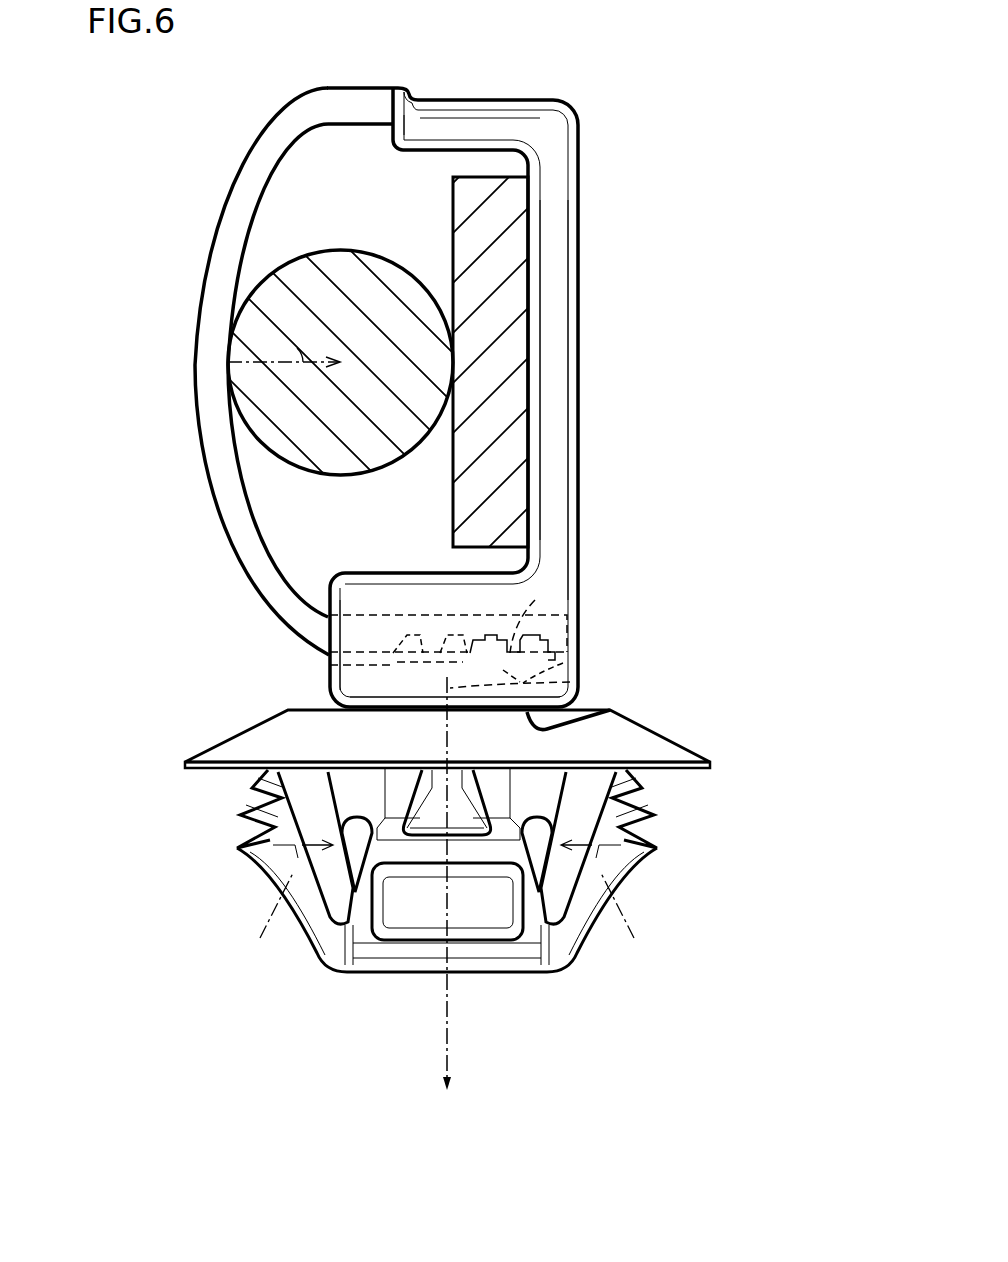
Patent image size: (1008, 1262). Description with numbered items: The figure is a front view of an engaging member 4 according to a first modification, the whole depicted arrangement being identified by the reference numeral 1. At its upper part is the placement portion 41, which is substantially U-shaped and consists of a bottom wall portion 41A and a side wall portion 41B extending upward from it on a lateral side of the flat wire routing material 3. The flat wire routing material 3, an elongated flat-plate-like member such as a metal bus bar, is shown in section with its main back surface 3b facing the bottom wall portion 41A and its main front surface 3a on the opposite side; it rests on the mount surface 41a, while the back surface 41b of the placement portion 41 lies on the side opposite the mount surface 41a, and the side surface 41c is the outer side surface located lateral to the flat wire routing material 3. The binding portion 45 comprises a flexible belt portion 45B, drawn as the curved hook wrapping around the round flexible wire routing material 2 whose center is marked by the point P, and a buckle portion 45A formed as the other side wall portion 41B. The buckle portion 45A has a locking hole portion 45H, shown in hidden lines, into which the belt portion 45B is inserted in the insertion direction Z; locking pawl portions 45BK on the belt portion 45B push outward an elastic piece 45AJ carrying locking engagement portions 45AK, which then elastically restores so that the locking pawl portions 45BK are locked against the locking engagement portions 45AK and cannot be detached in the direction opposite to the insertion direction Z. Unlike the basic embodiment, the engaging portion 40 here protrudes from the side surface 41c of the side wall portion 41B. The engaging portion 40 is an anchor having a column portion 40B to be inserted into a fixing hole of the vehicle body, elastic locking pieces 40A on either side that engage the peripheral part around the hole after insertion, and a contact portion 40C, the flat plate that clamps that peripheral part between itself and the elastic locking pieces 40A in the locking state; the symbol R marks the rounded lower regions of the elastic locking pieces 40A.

The vehicle interior component assembly 1 is at (629, 1025).
The flexible wire routing material 2 is at (255, 290).
The flat wire routing material 3 is at (445, 216).
The main front surface 3a is at (452, 258).
The main back surface 3b is at (530, 332).
The clip 4 is at (203, 795).
The engaging portion 40 is at (335, 978).
The elastic locking piece 40A is at (237, 848).
The column portion 40B is at (455, 853).
The contact portion 40C is at (662, 748).
The placement portion 41 is at (588, 135).
The bottom wall portion 41A is at (553, 350).
The side wall portion 41B is at (515, 125).
The mount surface 41a is at (527, 472).
The back surface 41b is at (581, 408).
The side surface 41c is at (478, 100).
The binding portion 45 is at (180, 325).
The buckle portion 45A is at (357, 605).
The belt portion 45B is at (212, 361).
The locking pawl portion 45BK is at (470, 653).
The locking engagement portion 45AK is at (531, 650).
The elastic piece 45AJ is at (570, 682).
The locking hole portion 45H is at (397, 662).
The center point P is at (293, 360).
The rotation direction R is at (444, 919).
The insertion direction Z is at (462, 1050).